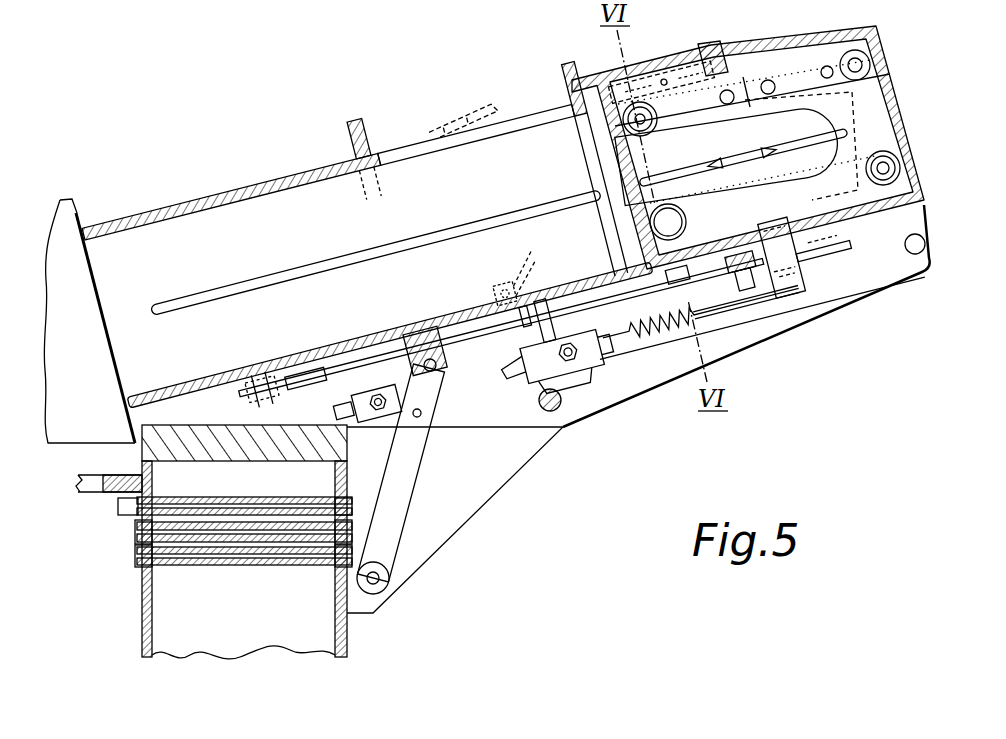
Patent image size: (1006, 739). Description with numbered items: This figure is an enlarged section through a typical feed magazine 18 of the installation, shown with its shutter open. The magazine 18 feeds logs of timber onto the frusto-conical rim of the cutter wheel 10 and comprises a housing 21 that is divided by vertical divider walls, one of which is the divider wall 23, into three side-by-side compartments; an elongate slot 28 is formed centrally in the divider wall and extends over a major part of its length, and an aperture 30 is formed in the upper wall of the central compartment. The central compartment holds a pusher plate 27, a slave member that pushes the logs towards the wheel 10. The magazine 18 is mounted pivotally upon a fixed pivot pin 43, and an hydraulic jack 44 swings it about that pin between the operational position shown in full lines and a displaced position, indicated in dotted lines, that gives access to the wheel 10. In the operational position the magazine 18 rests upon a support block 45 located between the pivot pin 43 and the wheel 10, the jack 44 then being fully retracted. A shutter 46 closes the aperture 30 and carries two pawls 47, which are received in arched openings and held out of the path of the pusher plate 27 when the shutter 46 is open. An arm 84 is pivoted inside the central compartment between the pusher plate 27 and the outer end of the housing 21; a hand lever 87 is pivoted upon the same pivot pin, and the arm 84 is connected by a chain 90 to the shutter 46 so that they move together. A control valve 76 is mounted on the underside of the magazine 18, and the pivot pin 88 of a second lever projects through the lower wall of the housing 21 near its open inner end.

The wheel 10 is at (76, 215).
The vertical divider wall 23 is at (246, 215).
The aperture 30 is at (385, 157).
The elongate slot 28 is at (470, 218).
The hydraulic jack 44 is at (498, 303).
The pawl 47 is at (693, 64).
The shutter 46 is at (782, 54).
The feed magazine 18 is at (897, 100).
The chain 90 is at (887, 125).
The housing 21 is at (923, 178).
The arm 84 is at (783, 233).
The hand lever 87 is at (887, 252).
The pusher plate 27 is at (636, 258).
The control valve 76 is at (573, 366).
The fixed pivot pin 43 is at (538, 402).
The pivot pin 88 is at (272, 393).
The support block 45 is at (330, 437).